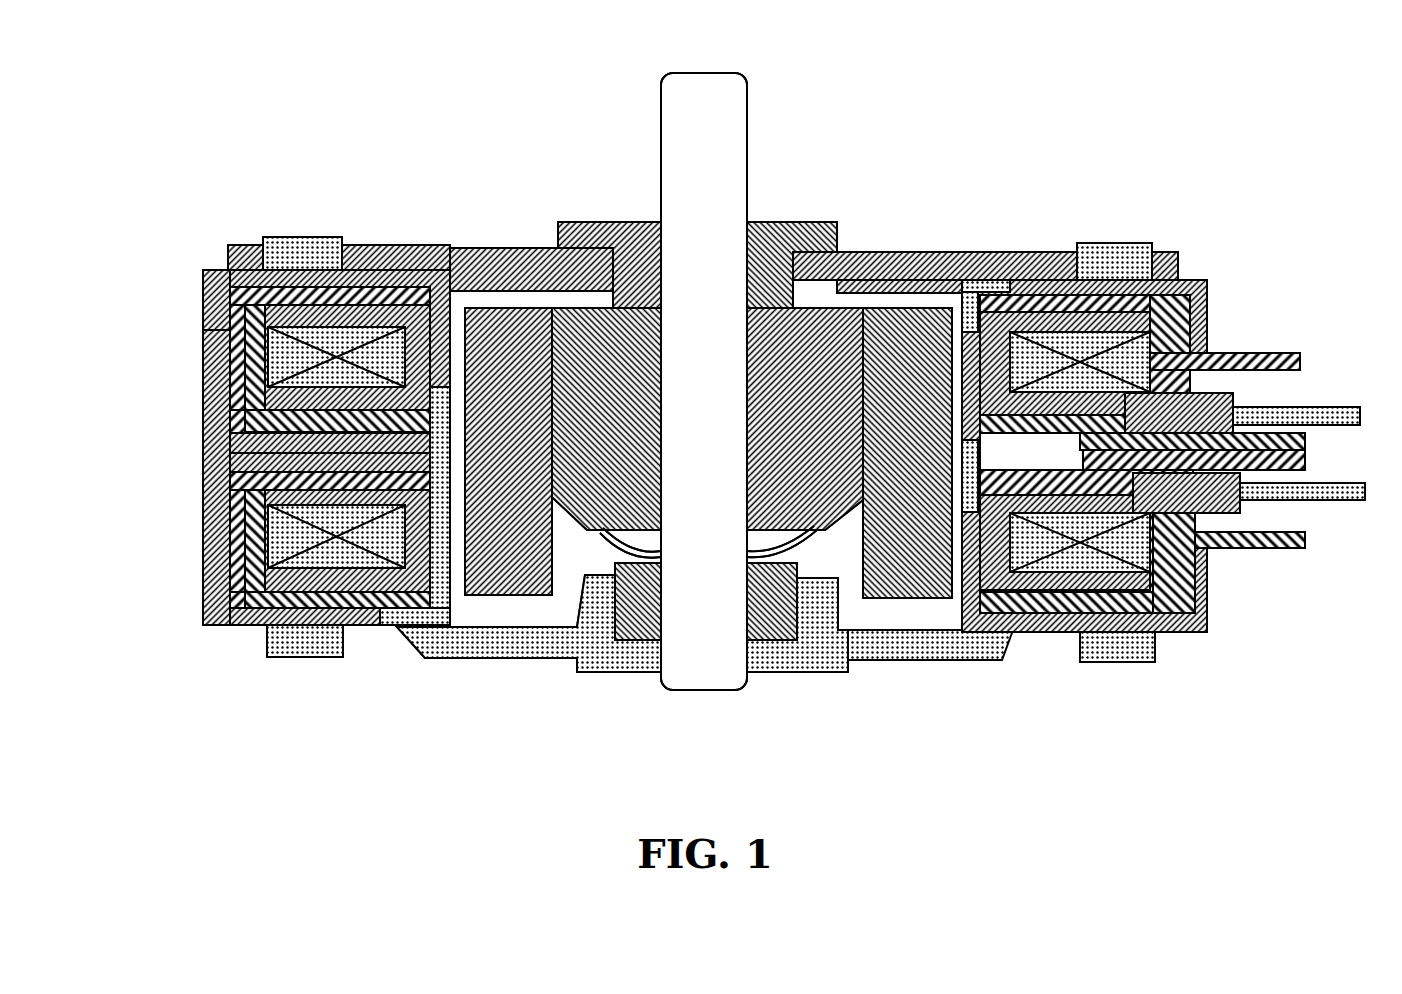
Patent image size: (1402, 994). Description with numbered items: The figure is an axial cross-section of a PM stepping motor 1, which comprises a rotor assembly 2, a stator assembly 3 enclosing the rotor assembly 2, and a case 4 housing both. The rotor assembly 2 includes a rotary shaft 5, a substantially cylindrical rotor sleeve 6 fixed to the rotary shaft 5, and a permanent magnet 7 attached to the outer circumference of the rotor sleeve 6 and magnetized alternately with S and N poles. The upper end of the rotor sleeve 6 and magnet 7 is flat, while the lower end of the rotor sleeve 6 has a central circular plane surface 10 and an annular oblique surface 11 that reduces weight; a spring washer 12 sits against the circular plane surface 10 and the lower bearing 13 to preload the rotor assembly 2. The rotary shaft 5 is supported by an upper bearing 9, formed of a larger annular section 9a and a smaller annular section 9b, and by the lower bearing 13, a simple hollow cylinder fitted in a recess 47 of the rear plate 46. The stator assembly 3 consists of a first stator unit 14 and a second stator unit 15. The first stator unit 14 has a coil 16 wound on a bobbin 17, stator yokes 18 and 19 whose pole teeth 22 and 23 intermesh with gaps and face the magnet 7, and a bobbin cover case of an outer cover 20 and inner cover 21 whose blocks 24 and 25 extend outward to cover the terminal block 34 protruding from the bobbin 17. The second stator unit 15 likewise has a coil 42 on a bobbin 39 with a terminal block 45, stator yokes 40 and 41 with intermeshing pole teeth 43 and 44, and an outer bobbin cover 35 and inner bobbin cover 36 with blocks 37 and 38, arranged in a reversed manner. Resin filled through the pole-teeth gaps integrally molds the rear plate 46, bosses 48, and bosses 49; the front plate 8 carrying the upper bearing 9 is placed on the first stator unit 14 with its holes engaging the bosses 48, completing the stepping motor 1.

The stepping motor 1 is at (1066, 137).
The rotor assembly 2 is at (810, 85).
The stator assembly 3 is at (130, 432).
The case 4 is at (425, 33).
The rotary shaft 5 is at (745, 162).
The rotor sleeve 6 is at (780, 320).
The permanent magnet 7 is at (878, 282).
The front plate 8 is at (905, 250).
The upper bearing 9 is at (475, 183).
The larger annular section 9a is at (560, 218).
The smaller annular section 9b is at (630, 268).
The circular plane surface 10 is at (653, 530).
The annular oblique surface 11 is at (832, 523).
The spring washer 12 is at (607, 535).
The lower bearing 13 is at (760, 620).
The first stator unit 14 is at (186, 438).
The second stator unit 15 is at (186, 498).
The coil 16 is at (205, 333).
The bobbin 17 is at (228, 262).
The stator yoke 18 is at (210, 300).
The stator yoke 19 is at (212, 420).
The outer cover 20 is at (315, 312).
The inner cover 21 is at (213, 378).
The pole teeth 22 is at (410, 272).
The pole teeth 23 is at (962, 330).
The block 24 is at (1220, 355).
The block 25 is at (1278, 433).
The terminal block 34 is at (1218, 397).
The outer bobbin cover 35 is at (240, 606).
The inner bobbin cover 36 is at (272, 600).
The block 37 is at (1278, 548).
The block 38 is at (1287, 477).
The bobbin 39 is at (356, 600).
The stator yoke 40 is at (200, 590).
The stator yoke 41 is at (215, 520).
The coil 42 is at (300, 563).
The pole teeth 43 is at (962, 582).
The pole teeth 44 is at (450, 572).
The terminal block 45 is at (1188, 505).
The rear plate 46 is at (437, 662).
The recess 47 is at (802, 622).
The bosses 48 is at (1092, 243).
The bosses 49 is at (1082, 655).